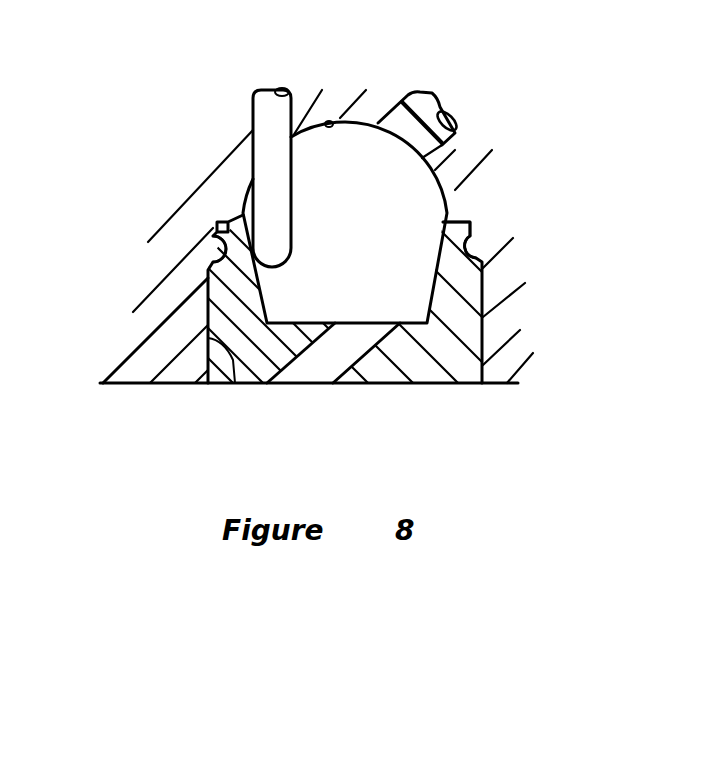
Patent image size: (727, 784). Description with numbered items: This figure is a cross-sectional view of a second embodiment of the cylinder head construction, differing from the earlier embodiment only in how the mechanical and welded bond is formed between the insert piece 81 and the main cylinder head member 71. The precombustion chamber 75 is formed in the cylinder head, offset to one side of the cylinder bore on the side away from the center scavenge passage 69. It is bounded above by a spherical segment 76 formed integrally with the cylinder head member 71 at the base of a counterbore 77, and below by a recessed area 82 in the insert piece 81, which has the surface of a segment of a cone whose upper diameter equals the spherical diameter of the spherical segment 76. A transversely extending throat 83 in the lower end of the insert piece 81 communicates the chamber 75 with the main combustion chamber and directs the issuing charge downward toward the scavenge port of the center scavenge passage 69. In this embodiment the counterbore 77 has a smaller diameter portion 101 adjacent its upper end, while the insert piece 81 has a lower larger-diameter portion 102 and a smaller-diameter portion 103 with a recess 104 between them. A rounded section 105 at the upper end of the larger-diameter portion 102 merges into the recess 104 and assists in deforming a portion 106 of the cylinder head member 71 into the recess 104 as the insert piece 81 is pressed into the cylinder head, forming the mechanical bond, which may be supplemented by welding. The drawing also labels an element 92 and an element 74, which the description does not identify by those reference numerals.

The center scavenge passage 69 is at (190, 140).
The pin 92 is at (268, 117).
The spherical segment 76 is at (332, 122).
The recessed area 82 is at (452, 147).
The precombustion chamber 75 is at (430, 213).
The portion of the cylinder head member 106 is at (473, 240).
The smaller diameter portion 101 is at (228, 221).
The smaller-diameter portion 103 is at (212, 250).
The recess 104 is at (470, 252).
The lower larger-diameter portion 102 is at (208, 361).
The rounded section 105 is at (483, 265).
The left body 74 is at (120, 385).
The counterbore 77 is at (233, 385).
The throat 83 is at (288, 368).
The insert piece 81 is at (425, 390).
The main cylinder head member 71 is at (536, 345).